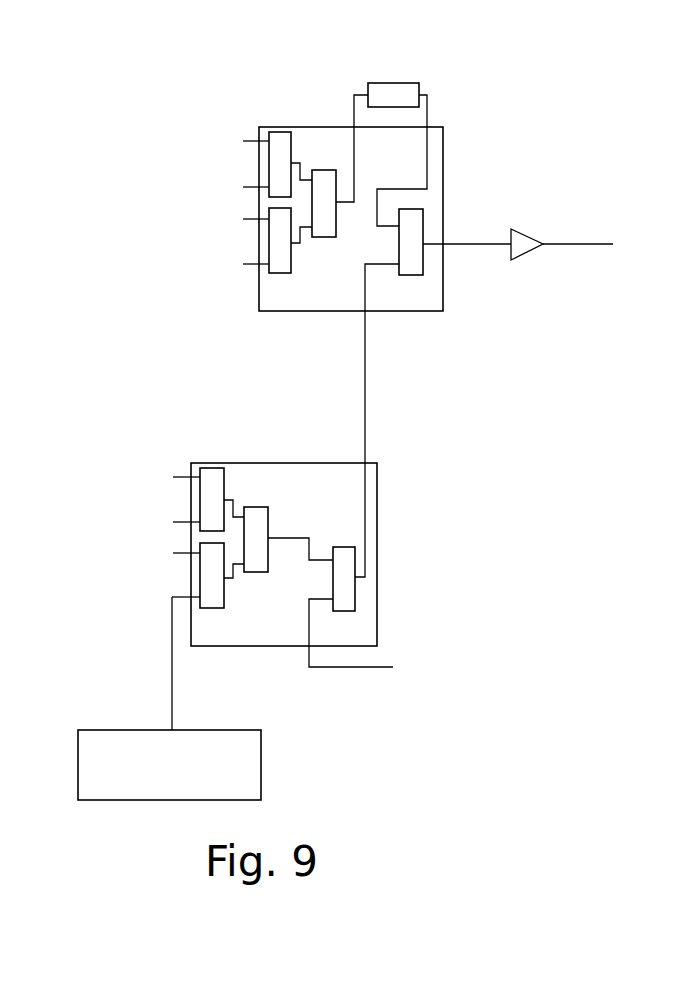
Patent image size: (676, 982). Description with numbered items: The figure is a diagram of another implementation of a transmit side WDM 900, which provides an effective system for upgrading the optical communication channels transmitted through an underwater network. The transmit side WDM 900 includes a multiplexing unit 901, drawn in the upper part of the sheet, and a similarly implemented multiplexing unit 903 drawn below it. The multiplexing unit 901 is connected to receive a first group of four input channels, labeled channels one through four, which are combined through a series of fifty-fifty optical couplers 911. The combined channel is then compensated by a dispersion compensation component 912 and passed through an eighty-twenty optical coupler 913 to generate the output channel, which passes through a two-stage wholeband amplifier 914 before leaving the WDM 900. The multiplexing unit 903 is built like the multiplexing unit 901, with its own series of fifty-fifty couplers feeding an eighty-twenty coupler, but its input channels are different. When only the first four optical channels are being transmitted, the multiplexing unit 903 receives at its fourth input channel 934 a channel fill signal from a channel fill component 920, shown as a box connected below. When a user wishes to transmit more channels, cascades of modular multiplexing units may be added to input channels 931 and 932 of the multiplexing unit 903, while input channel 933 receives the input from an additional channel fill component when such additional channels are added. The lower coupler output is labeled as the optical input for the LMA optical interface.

The transmit side WDM 900 is at (150, 124).
The multiplexing unit 901 is at (443, 127).
The multiplexing unit 903 is at (377, 463).
The 50/50 optical coupler 911 is at (280, 131).
The dispersion compensation component 912 is at (404, 83).
The 80/20 optical coupler 913 is at (424, 213).
The two-stage wholeband amplifier 914 is at (520, 229).
The channel fill component 920 is at (261, 730).
The input channel 931 is at (173, 477).
The input channel 932 is at (173, 522).
The input channel 933 is at (173, 553).
The input channel 934 is at (172, 597).